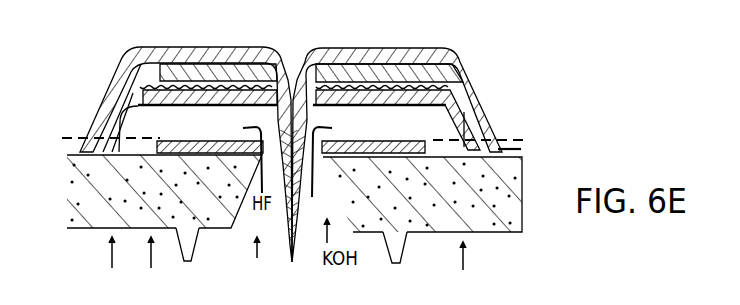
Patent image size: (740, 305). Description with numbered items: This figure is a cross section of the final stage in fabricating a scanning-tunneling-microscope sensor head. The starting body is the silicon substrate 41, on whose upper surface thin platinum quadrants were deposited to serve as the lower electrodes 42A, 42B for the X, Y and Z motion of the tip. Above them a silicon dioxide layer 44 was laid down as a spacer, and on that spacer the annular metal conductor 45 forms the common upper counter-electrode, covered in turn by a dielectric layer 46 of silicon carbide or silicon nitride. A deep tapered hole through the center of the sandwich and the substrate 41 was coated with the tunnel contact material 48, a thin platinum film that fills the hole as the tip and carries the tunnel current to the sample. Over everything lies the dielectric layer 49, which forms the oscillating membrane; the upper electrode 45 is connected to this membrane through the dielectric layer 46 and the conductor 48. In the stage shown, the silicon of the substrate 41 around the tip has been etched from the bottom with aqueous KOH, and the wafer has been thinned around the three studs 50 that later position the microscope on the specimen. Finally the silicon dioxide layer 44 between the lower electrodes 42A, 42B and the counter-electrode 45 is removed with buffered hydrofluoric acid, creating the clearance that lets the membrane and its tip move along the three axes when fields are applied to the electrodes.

The substrate 41 is at (498, 187).
The quadrant electrode 42A is at (145, 138).
The quadrant electrode 42B is at (427, 140).
The silicon dioxide layer 44 is at (435, 122).
The annular metal conductor 45 is at (397, 98).
The dielectric layer 46 is at (378, 82).
The tunnel contact material 48 is at (232, 77).
The dielectric layer 49 is at (150, 58).
The studs 50 is at (190, 257).